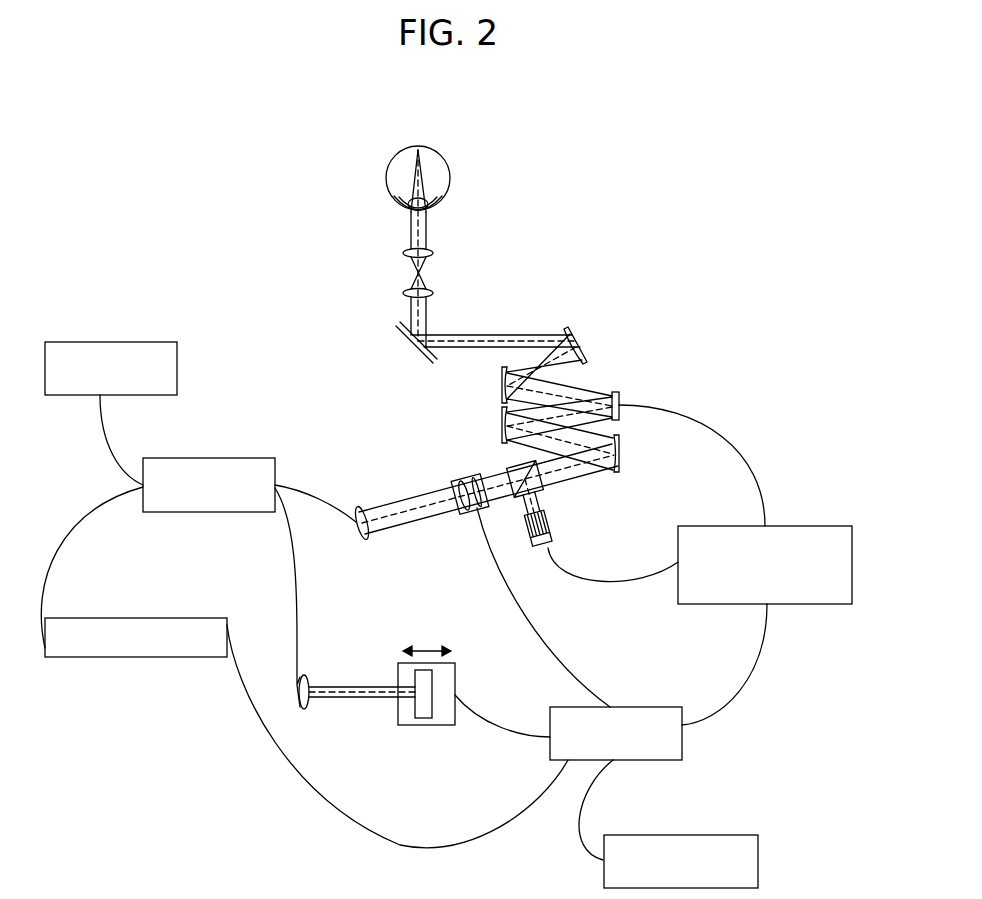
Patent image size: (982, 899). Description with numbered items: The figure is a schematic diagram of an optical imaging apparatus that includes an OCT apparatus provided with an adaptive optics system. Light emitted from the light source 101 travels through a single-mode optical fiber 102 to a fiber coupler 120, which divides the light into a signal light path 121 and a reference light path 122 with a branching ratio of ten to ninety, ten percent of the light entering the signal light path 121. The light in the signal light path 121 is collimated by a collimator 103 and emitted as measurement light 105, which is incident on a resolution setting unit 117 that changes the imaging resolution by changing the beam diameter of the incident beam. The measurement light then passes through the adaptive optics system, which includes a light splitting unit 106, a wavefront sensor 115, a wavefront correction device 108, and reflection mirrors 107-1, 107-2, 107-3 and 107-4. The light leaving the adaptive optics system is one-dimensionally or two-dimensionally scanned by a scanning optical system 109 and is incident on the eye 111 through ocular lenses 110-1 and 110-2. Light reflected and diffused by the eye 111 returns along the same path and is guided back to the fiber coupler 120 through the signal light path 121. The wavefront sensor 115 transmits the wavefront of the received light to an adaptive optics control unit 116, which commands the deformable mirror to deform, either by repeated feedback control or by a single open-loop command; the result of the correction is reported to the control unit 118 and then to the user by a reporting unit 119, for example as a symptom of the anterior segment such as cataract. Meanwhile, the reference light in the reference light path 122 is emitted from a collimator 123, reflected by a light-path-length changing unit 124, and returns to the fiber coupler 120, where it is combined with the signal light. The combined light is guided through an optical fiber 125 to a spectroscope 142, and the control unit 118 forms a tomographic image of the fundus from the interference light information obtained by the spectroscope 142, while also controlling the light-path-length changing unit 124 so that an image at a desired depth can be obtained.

The light source 101 is at (126, 342).
The single-mode optical fiber 102 is at (107, 437).
The collimator 103 is at (362, 540).
The measurement light 105 is at (382, 505).
The light splitting unit 106 is at (542, 487).
The reflection mirror 107-1 is at (623, 462).
The reflection mirror 107-2 is at (502, 425).
The reflection mirror 107-3 is at (502, 384).
The reflection mirror 107-4 is at (585, 350).
The wavefront correction device 108 is at (620, 392).
The scanning optical system 109 is at (412, 350).
The ocular lens 110-1 is at (433, 292).
The ocular lens 110-2 is at (433, 252).
The eye 111 is at (438, 149).
The wavefront sensor 115 is at (555, 540).
The adaptive optics control unit 116 is at (785, 526).
The resolution setting unit 117 is at (470, 512).
The control unit 118 is at (650, 707).
The reporting unit 119 is at (695, 835).
The fiber coupler 120 is at (220, 458).
The signal light path 121 is at (308, 492).
The reference light path 122 is at (293, 577).
The collimator 123 is at (305, 710).
The light-path-length changing unit 124 is at (425, 725).
The optical fiber 125 is at (48, 548).
The spectroscope 142 is at (150, 618).